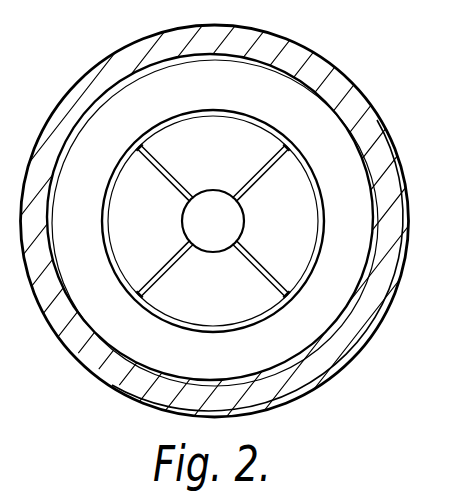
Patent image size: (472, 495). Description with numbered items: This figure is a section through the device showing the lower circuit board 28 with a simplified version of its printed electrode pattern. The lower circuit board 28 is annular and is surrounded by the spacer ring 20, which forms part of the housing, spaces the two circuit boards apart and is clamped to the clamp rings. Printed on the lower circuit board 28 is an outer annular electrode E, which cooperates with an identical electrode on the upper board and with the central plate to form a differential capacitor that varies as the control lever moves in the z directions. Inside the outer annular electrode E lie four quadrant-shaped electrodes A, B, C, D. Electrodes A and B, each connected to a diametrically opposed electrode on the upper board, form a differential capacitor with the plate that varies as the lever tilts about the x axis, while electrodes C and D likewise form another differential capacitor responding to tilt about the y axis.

The spacer ring 20 is at (92, 92).
The lower circuit board 28 is at (131, 320).
The outer annular electrode E is at (283, 103).
The quadrant-shaped electrode A is at (164, 190).
The quadrant-shaped electrode B is at (260, 254).
The quadrant-shaped electrode C is at (248, 173).
The quadrant-shaped electrode D is at (178, 271).